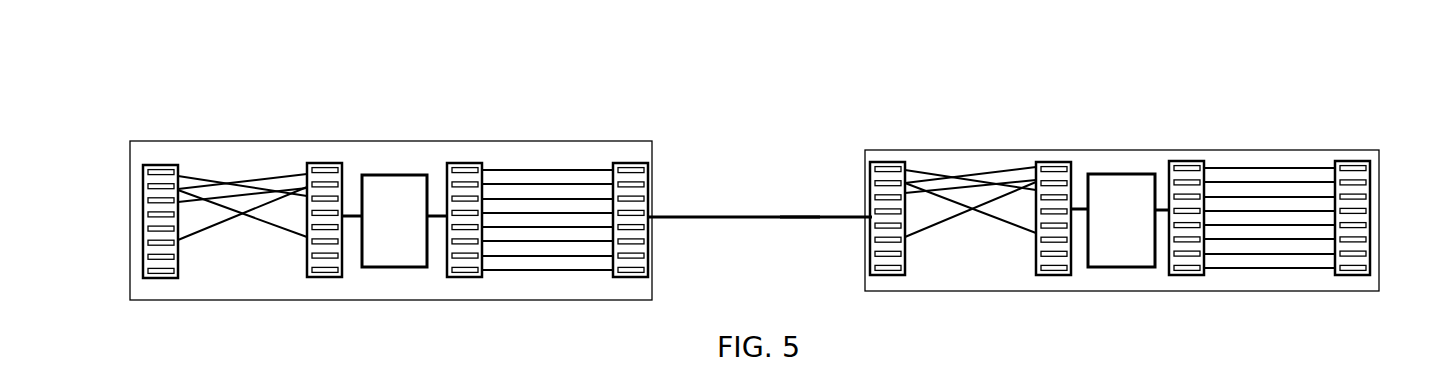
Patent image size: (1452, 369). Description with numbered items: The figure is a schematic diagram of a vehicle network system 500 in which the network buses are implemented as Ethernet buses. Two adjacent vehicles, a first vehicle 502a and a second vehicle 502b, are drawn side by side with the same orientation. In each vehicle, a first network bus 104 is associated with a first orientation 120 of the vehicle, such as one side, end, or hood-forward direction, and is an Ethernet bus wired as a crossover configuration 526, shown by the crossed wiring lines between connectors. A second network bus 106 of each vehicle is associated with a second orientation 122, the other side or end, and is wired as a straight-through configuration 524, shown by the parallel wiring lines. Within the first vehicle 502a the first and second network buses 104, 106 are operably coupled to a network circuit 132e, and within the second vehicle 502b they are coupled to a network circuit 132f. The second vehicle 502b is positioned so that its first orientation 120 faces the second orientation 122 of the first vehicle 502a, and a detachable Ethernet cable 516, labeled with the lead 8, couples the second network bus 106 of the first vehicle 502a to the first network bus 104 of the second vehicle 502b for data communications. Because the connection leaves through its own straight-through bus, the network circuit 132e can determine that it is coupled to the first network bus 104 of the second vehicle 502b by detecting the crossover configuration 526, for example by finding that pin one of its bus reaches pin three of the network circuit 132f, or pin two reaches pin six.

The vehicle network system 500 is at (137, 76).
The first vehicle 502a is at (390, 137).
The second vehicle 502b is at (1127, 148).
The first orientation 120 is at (128, 177).
The first network bus 104 is at (272, 275).
The network circuit 132e is at (395, 221).
The network circuit 132f is at (1120, 220).
The second network bus 106 is at (537, 285).
The second orientation 122 is at (653, 152).
The detachable Ethernet cable 516 is at (748, 215).
The optical fiber 8 is at (806, 204).
The crossover configuration 526 is at (972, 167).
The straight-through configuration 524 is at (1269, 145).